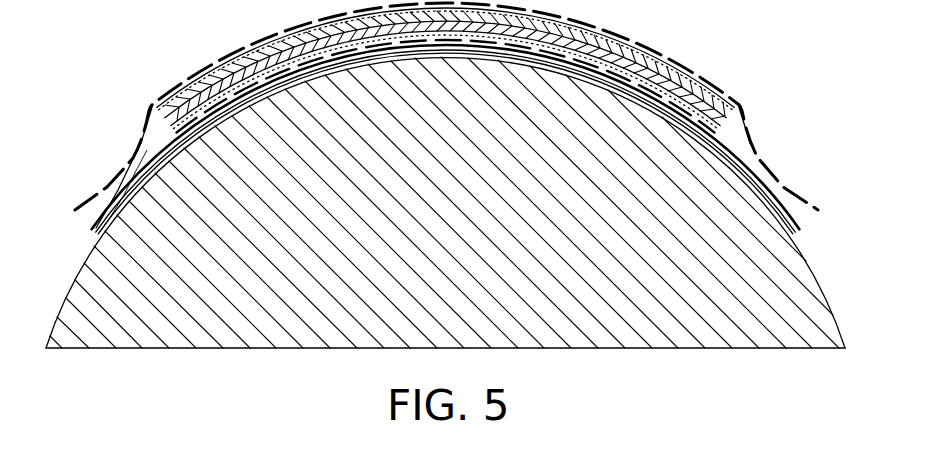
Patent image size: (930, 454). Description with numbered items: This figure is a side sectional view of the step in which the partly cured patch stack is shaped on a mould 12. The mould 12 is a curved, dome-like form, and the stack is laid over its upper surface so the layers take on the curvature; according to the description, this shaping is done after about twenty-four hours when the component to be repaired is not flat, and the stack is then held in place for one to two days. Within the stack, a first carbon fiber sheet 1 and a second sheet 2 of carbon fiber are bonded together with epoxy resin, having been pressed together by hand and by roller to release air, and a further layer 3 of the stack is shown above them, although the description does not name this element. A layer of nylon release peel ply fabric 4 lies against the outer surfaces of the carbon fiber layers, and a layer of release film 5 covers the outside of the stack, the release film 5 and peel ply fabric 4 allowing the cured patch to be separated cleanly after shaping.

The carbon fiber sheet 1 is at (192, 118).
The second sheet of carbon fiber 2 is at (230, 72).
The outer film layer 3 is at (287, 43).
The nylon release peel ply fabric 4 is at (130, 167).
The release film 5 is at (662, 103).
The mould 12 is at (248, 327).